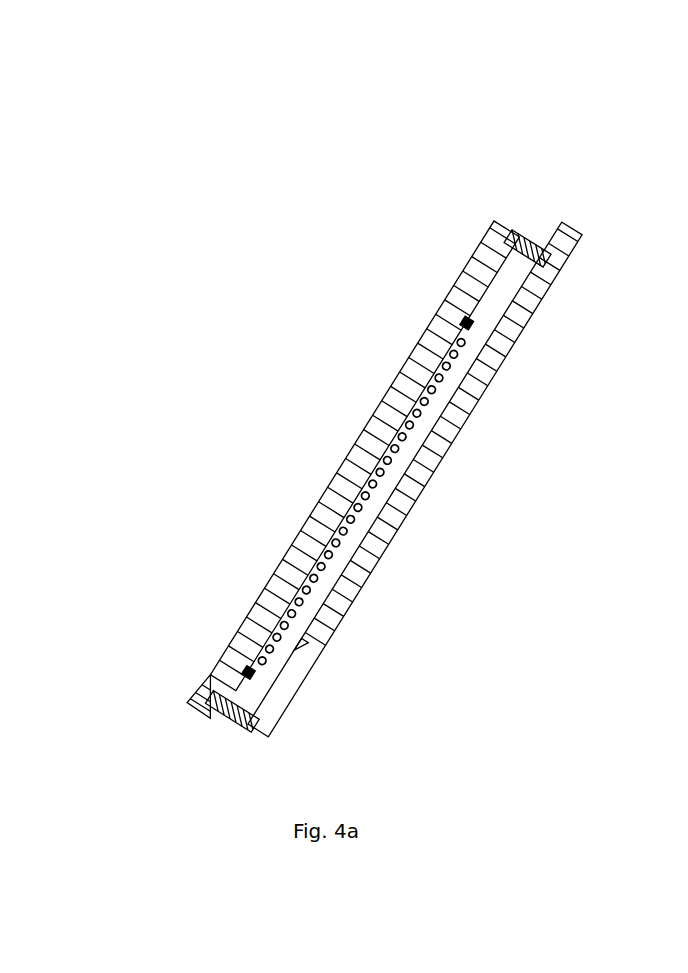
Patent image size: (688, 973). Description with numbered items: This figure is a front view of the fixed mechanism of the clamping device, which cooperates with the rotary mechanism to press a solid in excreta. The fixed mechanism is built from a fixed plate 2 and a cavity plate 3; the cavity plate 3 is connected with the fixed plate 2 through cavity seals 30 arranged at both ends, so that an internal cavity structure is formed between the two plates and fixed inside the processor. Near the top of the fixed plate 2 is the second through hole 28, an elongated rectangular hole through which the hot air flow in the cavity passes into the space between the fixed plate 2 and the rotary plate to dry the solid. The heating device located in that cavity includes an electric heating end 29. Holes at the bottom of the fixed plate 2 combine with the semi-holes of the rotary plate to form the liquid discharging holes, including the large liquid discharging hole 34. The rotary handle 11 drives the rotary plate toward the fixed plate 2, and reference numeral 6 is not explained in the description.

The fixed plate 2 is at (377, 433).
The cavity plate 3 is at (488, 390).
The light sources 6 is at (343, 500).
The rotary handle 11 is at (303, 662).
The second through hole 28 is at (472, 287).
The electric heating end 29 is at (247, 668).
The cavity seal 30 is at (525, 224).
The large liquid discharging hole 34 is at (198, 693).